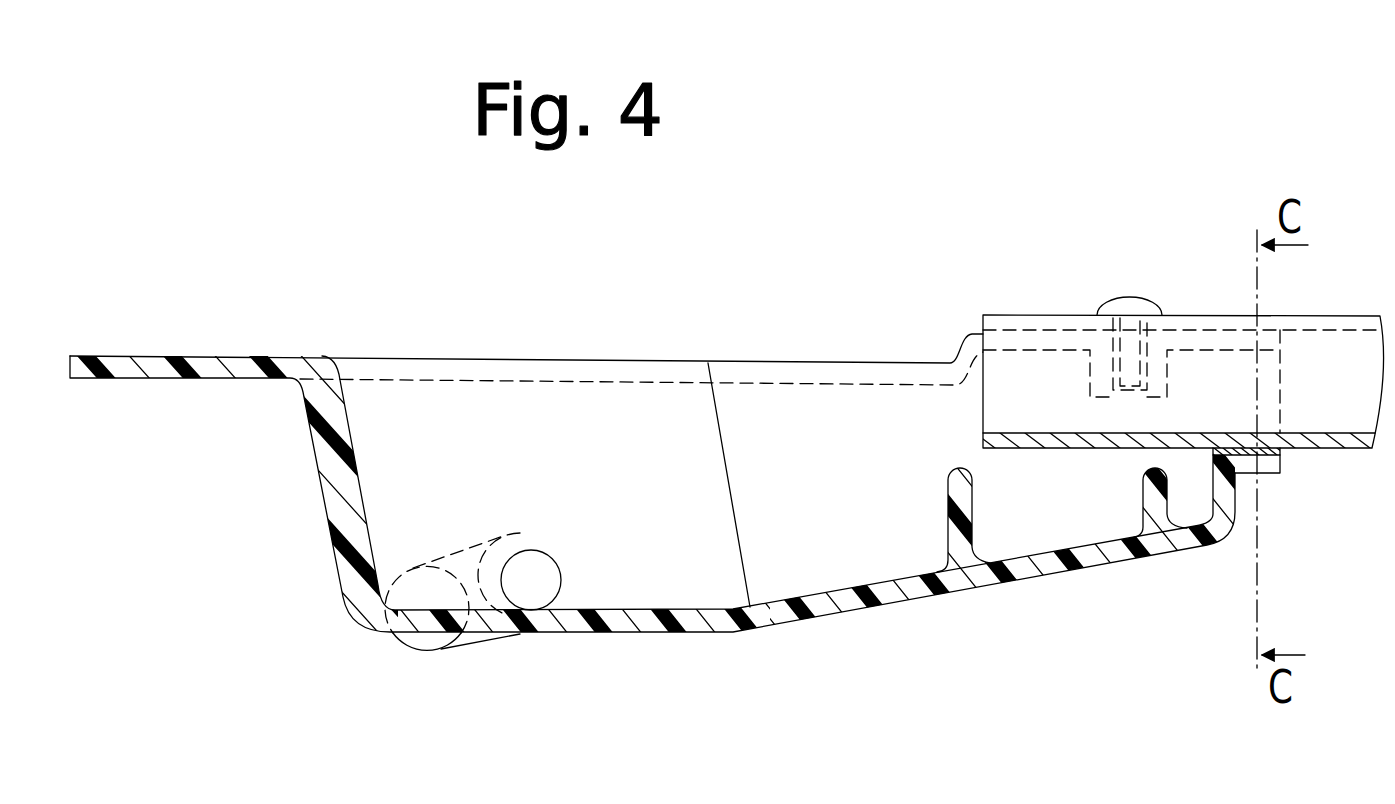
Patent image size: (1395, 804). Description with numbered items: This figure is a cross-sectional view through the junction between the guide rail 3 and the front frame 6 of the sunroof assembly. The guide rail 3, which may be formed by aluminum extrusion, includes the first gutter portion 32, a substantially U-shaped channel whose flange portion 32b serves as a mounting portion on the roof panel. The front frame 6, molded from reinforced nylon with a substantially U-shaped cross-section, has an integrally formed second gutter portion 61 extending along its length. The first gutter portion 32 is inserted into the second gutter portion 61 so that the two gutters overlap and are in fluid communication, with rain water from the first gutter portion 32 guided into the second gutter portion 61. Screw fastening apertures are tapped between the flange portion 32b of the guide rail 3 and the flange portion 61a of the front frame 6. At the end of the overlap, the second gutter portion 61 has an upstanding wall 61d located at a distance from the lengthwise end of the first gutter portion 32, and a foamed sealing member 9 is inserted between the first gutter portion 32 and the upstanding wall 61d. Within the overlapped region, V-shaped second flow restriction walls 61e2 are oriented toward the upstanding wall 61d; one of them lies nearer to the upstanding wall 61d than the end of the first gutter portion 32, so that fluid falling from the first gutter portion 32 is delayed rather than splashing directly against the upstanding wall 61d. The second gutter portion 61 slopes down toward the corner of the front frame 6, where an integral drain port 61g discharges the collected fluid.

The guide rail 3 is at (1185, 317).
The front frame 6 is at (318, 530).
The foamed sealing member 9 is at (1283, 458).
The first gutter portion 32 is at (1200, 432).
The flange portion 32b is at (1168, 320).
The second gutter portion 61 is at (678, 578).
The flange portion 61a is at (1018, 325).
The upstanding wall 61d is at (1237, 505).
The second flow restriction wall 61e2 is at (948, 500).
The drain port 61g is at (433, 650).